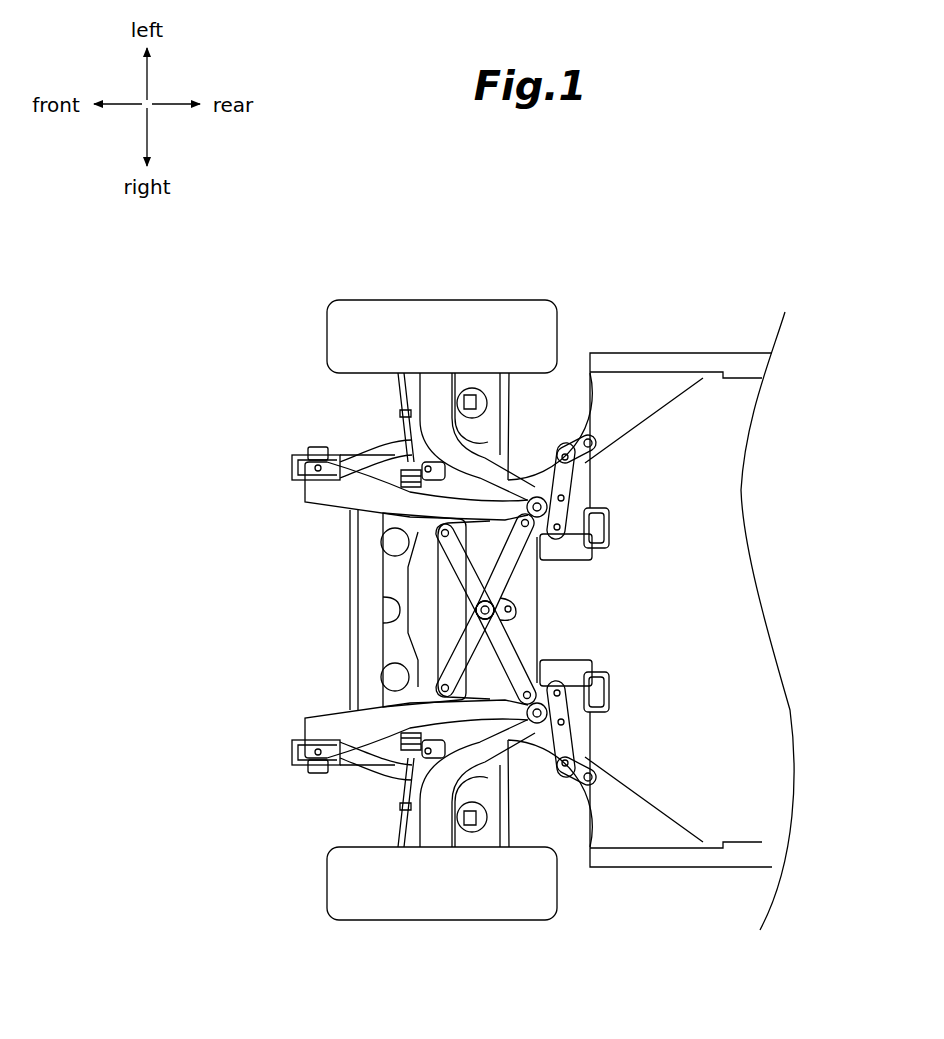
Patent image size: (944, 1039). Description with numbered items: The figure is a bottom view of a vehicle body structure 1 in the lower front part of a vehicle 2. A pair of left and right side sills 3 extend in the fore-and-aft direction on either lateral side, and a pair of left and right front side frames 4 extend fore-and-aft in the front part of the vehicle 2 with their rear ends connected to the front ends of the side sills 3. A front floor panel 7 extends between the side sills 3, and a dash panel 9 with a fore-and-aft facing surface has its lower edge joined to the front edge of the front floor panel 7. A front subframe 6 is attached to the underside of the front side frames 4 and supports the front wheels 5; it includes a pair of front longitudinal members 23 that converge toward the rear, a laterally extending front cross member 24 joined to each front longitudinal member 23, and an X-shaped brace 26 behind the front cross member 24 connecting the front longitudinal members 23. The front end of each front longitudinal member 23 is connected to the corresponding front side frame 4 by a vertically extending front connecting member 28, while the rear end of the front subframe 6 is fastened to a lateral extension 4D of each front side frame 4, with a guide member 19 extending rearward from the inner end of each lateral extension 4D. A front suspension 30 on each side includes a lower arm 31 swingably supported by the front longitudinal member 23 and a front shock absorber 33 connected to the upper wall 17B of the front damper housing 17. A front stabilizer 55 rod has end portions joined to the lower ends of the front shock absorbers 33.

The vehicle body structure 1 is at (727, 580).
The vehicle 2 is at (378, 606).
The side sill 3 is at (678, 356).
The front side frame 4 is at (288, 450).
The lateral extension 4D is at (567, 555).
The front wheel 5 is at (376, 310).
The front subframe 6 is at (382, 610).
The front floor panel 7 is at (770, 745).
The dash panel 9 is at (532, 624).
The front damper housing 17 is at (465, 839).
The upper wall 17B is at (502, 845).
The guide member 19 is at (612, 525).
The front longitudinal member 23 is at (320, 500).
The front cross member 24 is at (390, 640).
The brace 26 is at (512, 660).
The front connecting member 28 is at (318, 447).
The front suspension 30 is at (386, 807).
The lower arm 31 is at (435, 840).
The front shock absorber 33 is at (470, 393).
The front stabilizer 55 is at (350, 600).